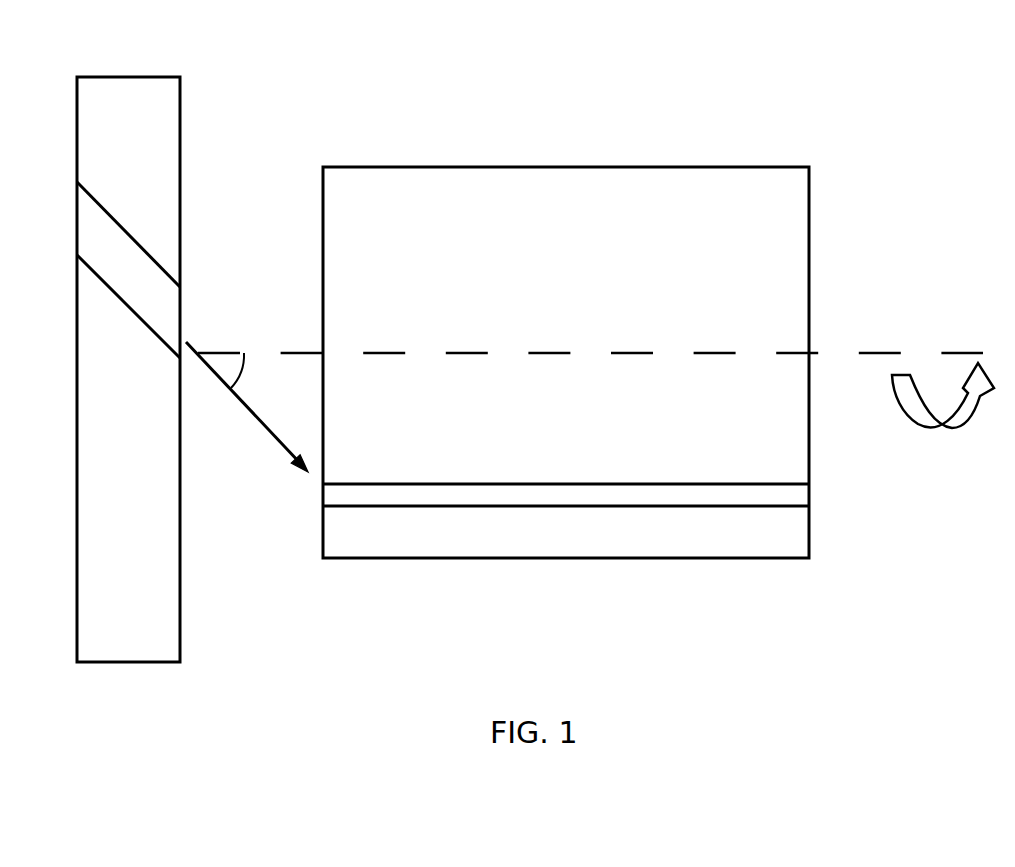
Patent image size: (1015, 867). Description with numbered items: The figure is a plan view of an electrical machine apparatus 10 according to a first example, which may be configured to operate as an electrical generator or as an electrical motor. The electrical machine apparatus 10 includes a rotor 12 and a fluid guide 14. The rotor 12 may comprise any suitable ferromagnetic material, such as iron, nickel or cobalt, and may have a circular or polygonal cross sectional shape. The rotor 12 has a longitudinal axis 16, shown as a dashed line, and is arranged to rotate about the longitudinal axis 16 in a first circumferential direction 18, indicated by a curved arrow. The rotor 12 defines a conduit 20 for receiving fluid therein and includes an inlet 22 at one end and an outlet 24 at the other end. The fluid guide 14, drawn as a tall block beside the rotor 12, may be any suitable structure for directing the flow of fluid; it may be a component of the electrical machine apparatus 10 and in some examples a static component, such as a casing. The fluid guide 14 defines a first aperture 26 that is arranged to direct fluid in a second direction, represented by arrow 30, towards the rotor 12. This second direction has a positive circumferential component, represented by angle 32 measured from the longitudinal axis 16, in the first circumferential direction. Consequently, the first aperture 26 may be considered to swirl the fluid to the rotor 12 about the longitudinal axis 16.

The electrical machine apparatus 10 is at (774, 90).
The rotor 12 is at (788, 225).
The fluid guide 14 is at (97, 622).
The longitudinal axis 16 is at (898, 353).
The first circumferential direction 18 is at (922, 417).
The conduit 20 is at (600, 507).
The inlet 22 is at (340, 528).
The outlet 24 is at (795, 530).
The first aperture 26 is at (110, 247).
The arrow 30 is at (250, 407).
The angle 32 is at (227, 365).